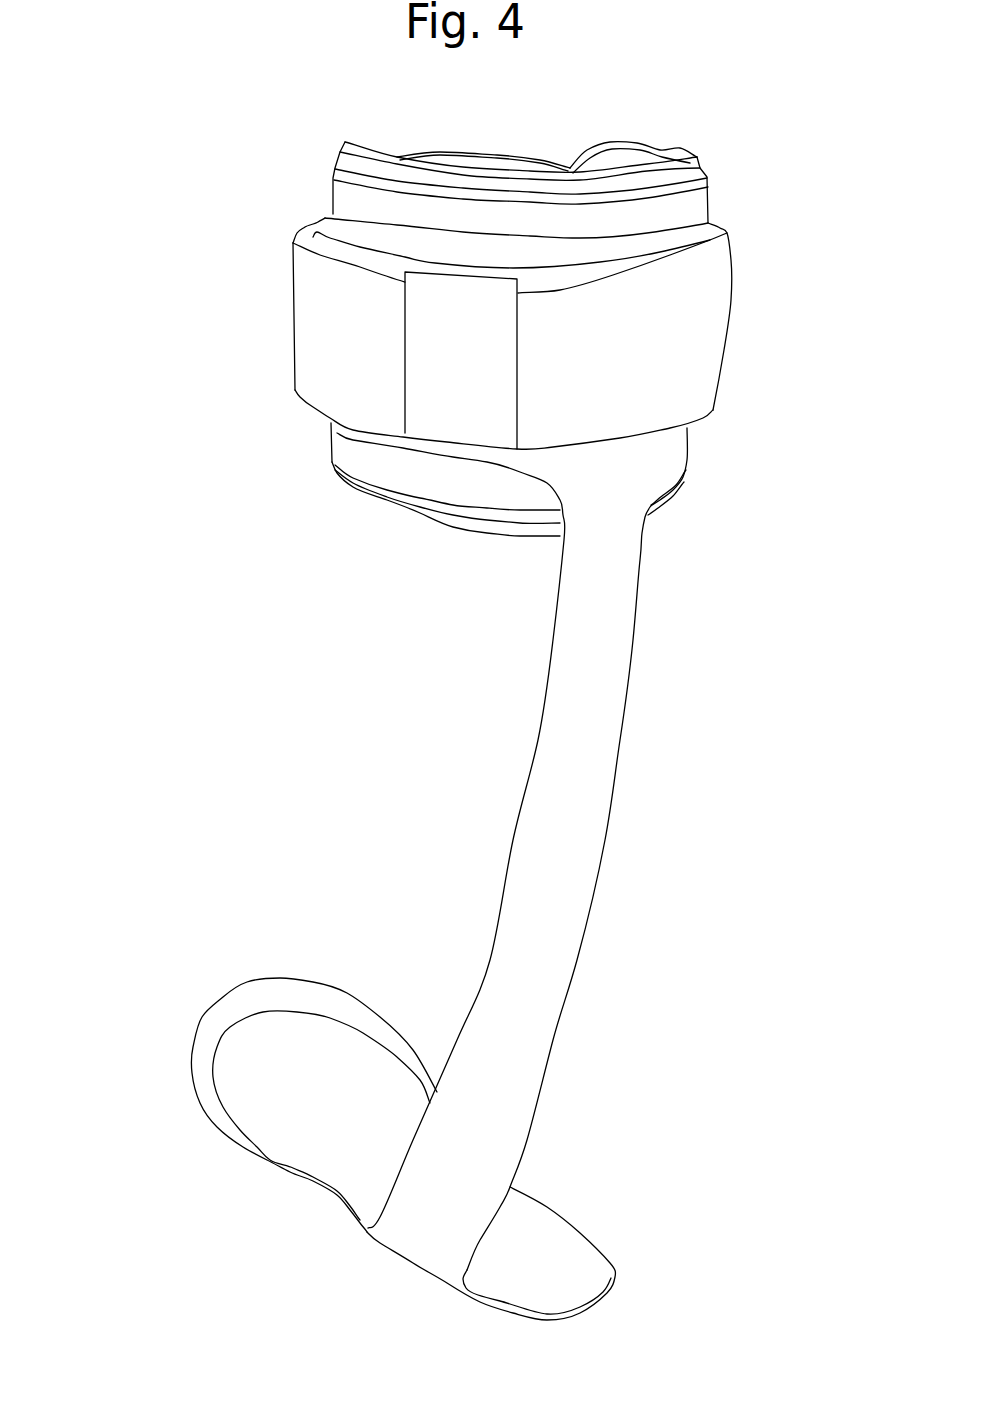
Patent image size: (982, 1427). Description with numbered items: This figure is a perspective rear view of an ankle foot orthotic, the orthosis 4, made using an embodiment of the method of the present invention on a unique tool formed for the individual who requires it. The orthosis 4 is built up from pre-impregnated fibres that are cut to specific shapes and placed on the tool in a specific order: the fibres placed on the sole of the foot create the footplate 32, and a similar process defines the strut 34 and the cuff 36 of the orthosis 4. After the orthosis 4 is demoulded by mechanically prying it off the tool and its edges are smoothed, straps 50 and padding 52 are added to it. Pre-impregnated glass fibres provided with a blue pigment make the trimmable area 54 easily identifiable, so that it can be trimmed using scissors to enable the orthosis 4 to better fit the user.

The orthosis 4 is at (271, 147).
The footplate 32 is at (263, 1163).
The strut 34 is at (592, 902).
The cuff 36 is at (325, 217).
The straps 50 is at (293, 318).
The padding 52 is at (683, 145).
The trimmable area 54 is at (202, 1017).